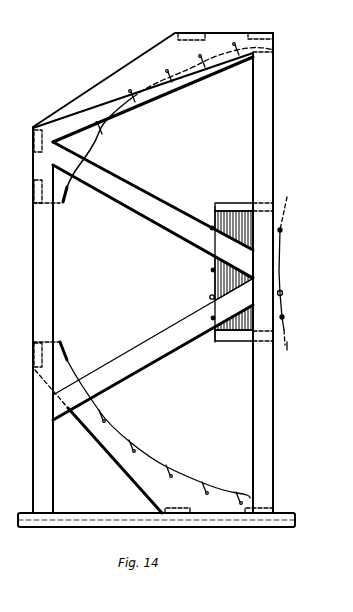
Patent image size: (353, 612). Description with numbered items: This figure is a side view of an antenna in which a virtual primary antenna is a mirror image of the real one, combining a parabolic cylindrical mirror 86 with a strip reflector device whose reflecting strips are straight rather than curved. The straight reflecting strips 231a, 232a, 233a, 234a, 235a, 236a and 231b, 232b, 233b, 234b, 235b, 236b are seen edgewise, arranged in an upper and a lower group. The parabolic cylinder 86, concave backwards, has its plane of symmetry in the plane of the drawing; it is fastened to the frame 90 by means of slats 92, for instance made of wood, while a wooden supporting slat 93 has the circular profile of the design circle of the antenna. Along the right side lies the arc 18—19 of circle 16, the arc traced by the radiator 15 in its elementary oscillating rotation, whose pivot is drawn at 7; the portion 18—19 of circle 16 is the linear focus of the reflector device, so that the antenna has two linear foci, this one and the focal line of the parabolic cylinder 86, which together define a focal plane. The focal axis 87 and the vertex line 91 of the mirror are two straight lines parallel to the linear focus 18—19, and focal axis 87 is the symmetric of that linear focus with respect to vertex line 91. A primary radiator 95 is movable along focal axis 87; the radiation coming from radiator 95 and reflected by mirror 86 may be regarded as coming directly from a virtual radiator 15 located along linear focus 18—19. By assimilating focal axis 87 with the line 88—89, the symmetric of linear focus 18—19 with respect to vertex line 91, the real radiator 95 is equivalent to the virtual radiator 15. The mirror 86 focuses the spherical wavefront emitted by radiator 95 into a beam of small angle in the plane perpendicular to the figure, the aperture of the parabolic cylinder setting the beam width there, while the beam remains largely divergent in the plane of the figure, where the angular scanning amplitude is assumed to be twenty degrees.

The pivot axis line 7 is at (280, 272).
The virtual radiator 15 is at (283, 293).
The circle 16 is at (287, 347).
The end point of arc 18 is at (283, 230).
The end point of arc 19 is at (284, 317).
The parabolic cylindrical mirror 86 is at (212, 270).
The focal axis 87 is at (214, 207).
The end point of symmetric line 88 is at (212, 228).
The end point of symmetric line 89 is at (212, 318).
The frame 90 is at (33, 308).
The vertex line 91 is at (250, 235).
The slats 92 is at (240, 203).
The wooden supporting slat 93 is at (120, 466).
The primary radiator 95 is at (209, 297).
The reflecting strip 231a is at (233, 62).
The reflecting strip 232a is at (200, 70).
The reflecting strip 233a is at (166, 84).
The reflecting strip 234a is at (130, 104).
The reflecting strip 235a is at (99, 134).
The reflecting strip 236a is at (75, 197).
The reflecting strip 231b is at (236, 492).
The reflecting strip 232b is at (202, 482).
The reflecting strip 233b is at (166, 466).
The reflecting strip 234b is at (131, 440).
The reflecting strip 235b is at (101, 410).
The reflecting strip 236b is at (80, 328).